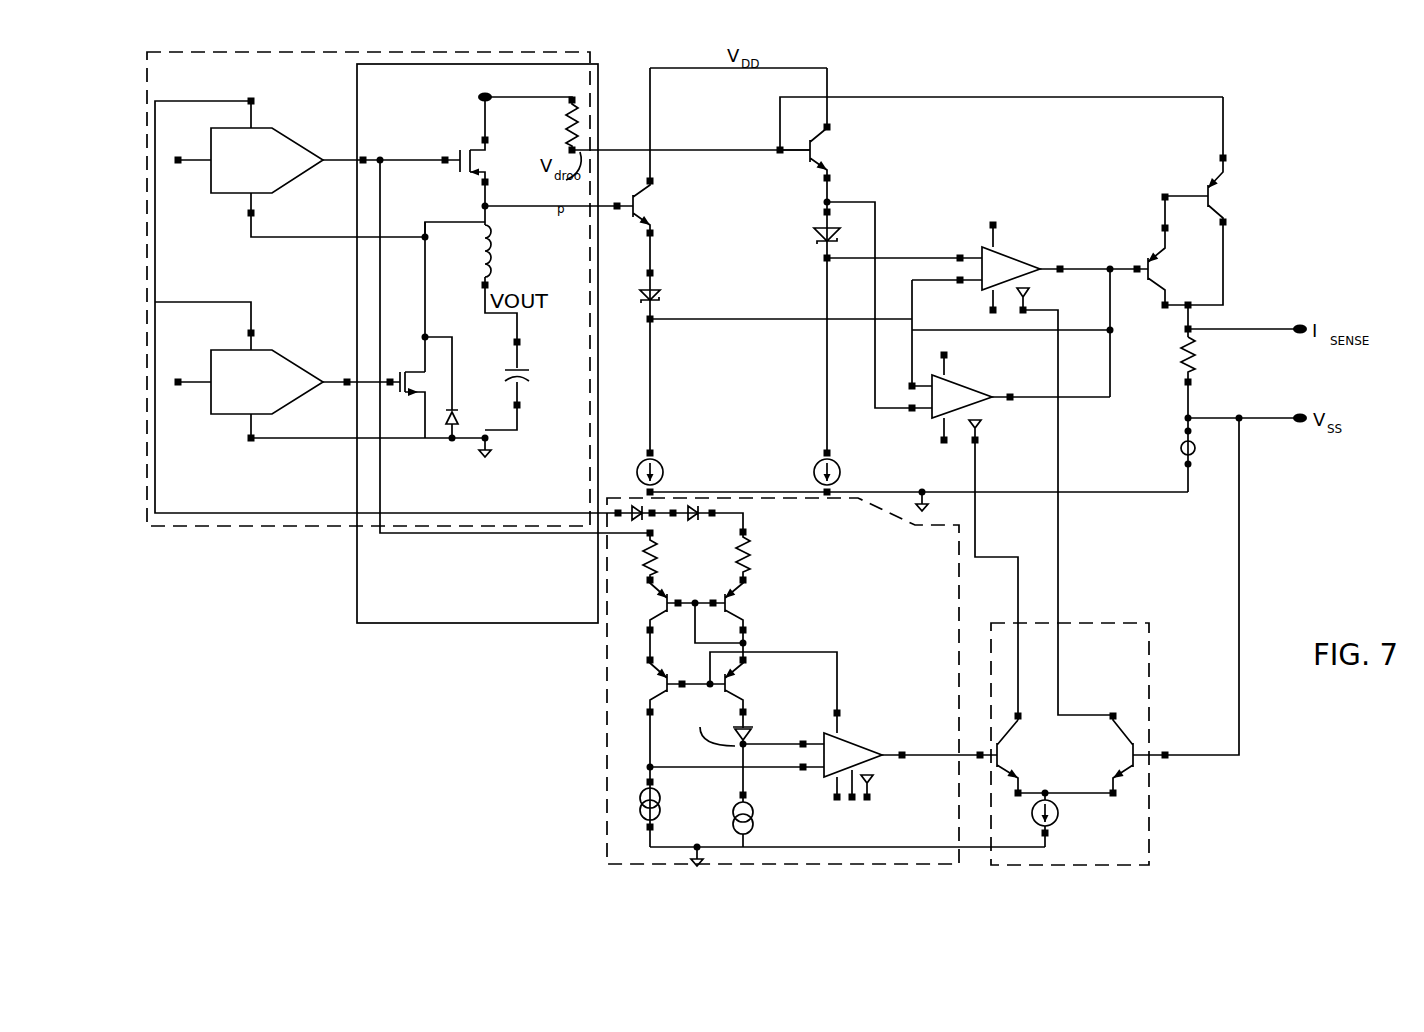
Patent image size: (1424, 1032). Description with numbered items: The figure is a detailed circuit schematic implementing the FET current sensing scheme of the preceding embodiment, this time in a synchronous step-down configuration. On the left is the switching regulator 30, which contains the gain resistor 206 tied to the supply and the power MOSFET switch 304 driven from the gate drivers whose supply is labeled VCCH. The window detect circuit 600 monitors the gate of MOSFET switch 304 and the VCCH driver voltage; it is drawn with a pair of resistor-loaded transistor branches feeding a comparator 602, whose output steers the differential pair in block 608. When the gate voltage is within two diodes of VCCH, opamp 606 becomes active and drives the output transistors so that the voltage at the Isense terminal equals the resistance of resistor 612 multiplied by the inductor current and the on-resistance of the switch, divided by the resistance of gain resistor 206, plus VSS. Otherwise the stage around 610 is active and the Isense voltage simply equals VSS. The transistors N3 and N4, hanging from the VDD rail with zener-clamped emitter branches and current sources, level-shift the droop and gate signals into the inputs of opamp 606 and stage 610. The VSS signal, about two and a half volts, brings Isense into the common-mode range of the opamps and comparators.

The switching regulator 30 is at (210, 527).
The gain resistor 206 is at (562, 133).
The MOSFET switch 304 is at (480, 158).
The window detect circuit 600 is at (781, 682).
The comparator 602 is at (822, 793).
The opamp 606 is at (1031, 257).
The differential pair circuit 608 is at (1149, 820).
The comparator 610 is at (930, 422).
The resistor 612 is at (1200, 357).
The transistor N3 is at (830, 263).
The transistor N4 is at (657, 326).